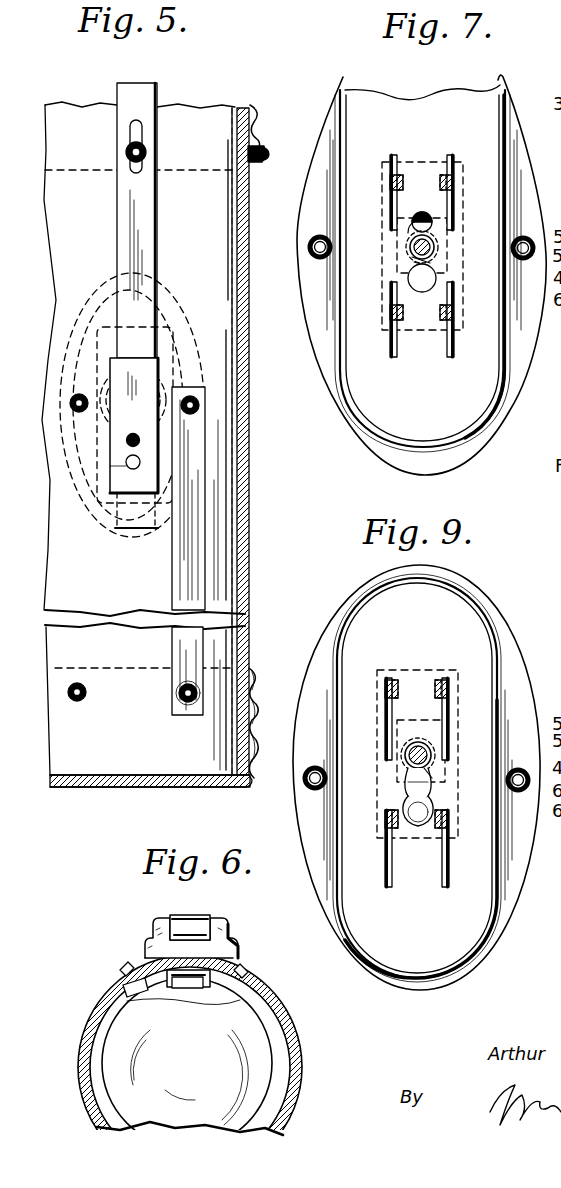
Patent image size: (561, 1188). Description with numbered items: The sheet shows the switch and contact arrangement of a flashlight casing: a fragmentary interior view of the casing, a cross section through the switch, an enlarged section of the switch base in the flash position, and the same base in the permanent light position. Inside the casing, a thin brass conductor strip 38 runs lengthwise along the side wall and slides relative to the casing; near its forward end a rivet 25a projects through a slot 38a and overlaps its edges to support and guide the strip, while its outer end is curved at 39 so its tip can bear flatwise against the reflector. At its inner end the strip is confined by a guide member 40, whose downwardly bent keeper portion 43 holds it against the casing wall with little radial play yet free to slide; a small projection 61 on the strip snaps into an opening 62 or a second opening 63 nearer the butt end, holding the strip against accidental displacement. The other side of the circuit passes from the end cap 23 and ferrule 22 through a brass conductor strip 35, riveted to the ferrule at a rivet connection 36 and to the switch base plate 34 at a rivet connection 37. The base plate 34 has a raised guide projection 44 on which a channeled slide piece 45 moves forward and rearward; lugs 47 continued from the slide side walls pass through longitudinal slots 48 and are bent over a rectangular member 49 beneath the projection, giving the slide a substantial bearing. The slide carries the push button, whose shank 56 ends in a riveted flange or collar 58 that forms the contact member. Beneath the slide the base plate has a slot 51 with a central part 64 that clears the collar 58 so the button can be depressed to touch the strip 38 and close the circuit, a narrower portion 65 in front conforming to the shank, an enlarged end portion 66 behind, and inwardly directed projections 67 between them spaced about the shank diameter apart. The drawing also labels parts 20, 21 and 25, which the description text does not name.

In FIG. 5, the tubular wall 20 is at (242, 216).
In FIG. 6, the tubular wall 20 is at (97, 1026).
In FIG. 6, the inner liner 21 is at (262, 1043).
In FIG. 5, the ferrule 22 is at (252, 687).
In FIG. 5, the end cap 23 is at (254, 713).
In FIG. 5, the bead 25 is at (254, 110).
In FIG. 5, the rivet 25a is at (143, 147).
In FIG. 5, the base plate 34 is at (188, 350).
In FIG. 7, the base plate 34 is at (503, 405).
In FIG. 9, the base plate 34 is at (515, 713).
In FIG. 6, the base plate 34 is at (236, 967).
In FIG. 5, the conductor strip 35 is at (192, 548).
In FIG. 6, the conductor strip 35 is at (138, 988).
In FIG. 5, the rivet connection 36 is at (196, 690).
In FIG. 5, the rivet connection 37 is at (199, 407).
In FIG. 7, the rivet connection 37 is at (315, 252).
In FIG. 9, the rivet connection 37 is at (308, 781).
In FIG. 6, the rivet connection 37 is at (125, 968).
In FIG. 5, the conductor strip 38 is at (148, 200).
In FIG. 5, the slot 38a is at (130, 133).
In FIG. 6, the curved end portion 39 is at (193, 988).
In FIG. 5, the guide member 40 is at (122, 480).
In FIG. 5, the keeper portion 43 is at (117, 367).
In FIG. 6, the keeper portion 43 is at (210, 982).
In FIG. 7, the guide projection 44 is at (422, 268).
In FIG. 9, the guide projection 44 is at (472, 637).
In FIG. 6, the guide projection 44 is at (236, 945).
In FIG. 6, the slide piece 45 is at (190, 915).
In FIG. 7, the lugs 47 is at (454, 182).
In FIG. 9, the lugs 47 is at (449, 690).
In FIG. 7, the longitudinal slots 48 is at (450, 157).
In FIG. 9, the longitudinal slots 48 is at (388, 728).
In FIG. 7, the rectangular member 49 is at (453, 250).
In FIG. 9, the rectangular member 49 is at (443, 786).
In FIG. 7, the slot 51 is at (413, 222).
In FIG. 7, the shank 56 is at (416, 249).
In FIG. 9, the shank 56 is at (410, 760).
In FIG. 7, the flange or collar 58 is at (417, 264).
In FIG. 9, the flange or collar 58 is at (426, 780).
In FIG. 5, the projection 61 is at (127, 440).
In FIG. 7, the projection 61 is at (555, 327).
In FIG. 5, the opening 62 is at (128, 452).
In FIG. 9, the opening 62 is at (556, 858).
In FIG. 5, the opening 63 is at (120, 468).
In FIG. 7, the opening 63 is at (556, 361).
In FIG. 9, the opening 63 is at (556, 887).
In FIG. 9, the central part 64 is at (413, 785).
In FIG. 7, the narrower portion 65 is at (428, 227).
In FIG. 7, the enlarged end portion 66 is at (423, 286).
In FIG. 9, the enlarged end portion 66 is at (417, 812).
In FIG. 9, the inwardly directed projections 67 is at (407, 792).